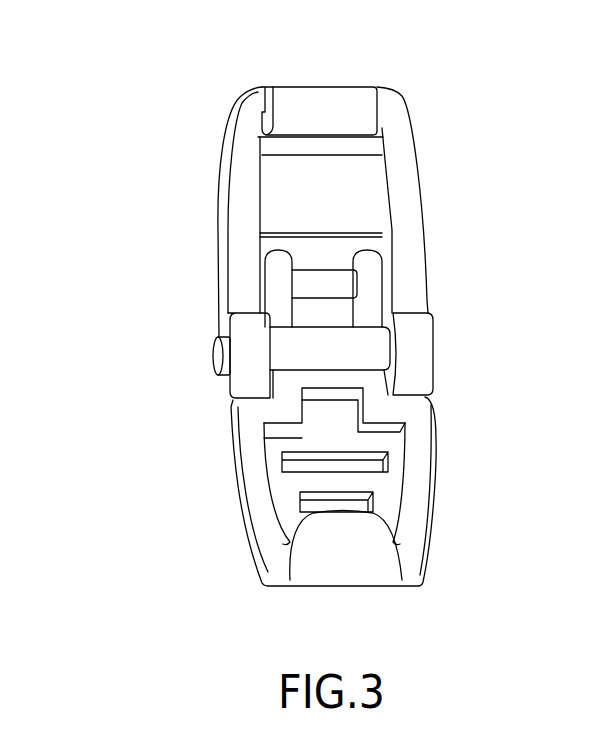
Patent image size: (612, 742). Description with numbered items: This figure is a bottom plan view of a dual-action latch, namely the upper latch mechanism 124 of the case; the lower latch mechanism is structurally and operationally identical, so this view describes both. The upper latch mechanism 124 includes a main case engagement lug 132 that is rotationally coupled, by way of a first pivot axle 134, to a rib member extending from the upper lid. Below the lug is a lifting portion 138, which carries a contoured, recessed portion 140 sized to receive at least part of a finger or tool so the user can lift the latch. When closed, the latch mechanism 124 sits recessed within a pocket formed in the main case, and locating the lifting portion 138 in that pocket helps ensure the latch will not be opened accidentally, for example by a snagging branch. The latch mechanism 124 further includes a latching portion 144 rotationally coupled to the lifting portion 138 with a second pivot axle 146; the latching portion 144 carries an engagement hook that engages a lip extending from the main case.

The upper latch mechanism 124 is at (168, 110).
The main case engagement lug 132 is at (277, 277).
The first pivot axle 134 is at (325, 268).
The lifting portion 138 is at (438, 487).
The recessed portion 140 is at (366, 560).
The latching portion 144 is at (413, 132).
The second pivot axle 146 is at (215, 355).